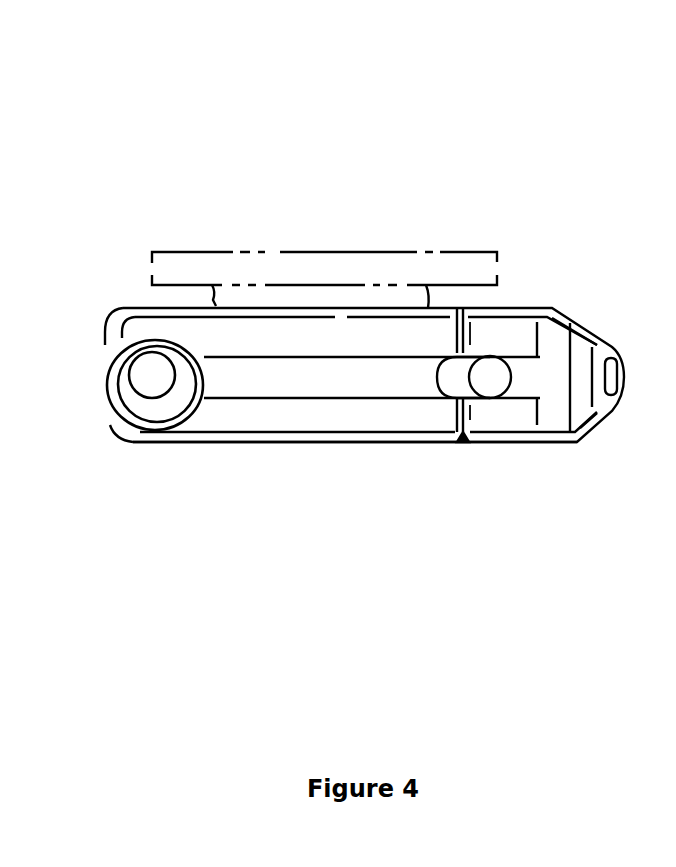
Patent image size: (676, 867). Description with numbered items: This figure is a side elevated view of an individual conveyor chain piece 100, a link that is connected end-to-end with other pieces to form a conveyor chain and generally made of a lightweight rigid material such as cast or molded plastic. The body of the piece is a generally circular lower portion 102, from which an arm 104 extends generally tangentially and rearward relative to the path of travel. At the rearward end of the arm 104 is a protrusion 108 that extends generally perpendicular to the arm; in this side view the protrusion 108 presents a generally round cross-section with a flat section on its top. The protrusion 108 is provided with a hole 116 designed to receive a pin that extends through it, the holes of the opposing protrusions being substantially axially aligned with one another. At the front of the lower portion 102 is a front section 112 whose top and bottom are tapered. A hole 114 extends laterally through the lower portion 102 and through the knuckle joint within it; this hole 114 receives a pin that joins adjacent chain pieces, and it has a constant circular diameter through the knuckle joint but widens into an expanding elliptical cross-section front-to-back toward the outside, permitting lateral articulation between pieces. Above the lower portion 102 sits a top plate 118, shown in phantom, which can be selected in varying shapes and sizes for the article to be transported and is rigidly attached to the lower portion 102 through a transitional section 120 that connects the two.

The conveyor chain piece 100 is at (229, 74).
The lower portion 102 is at (558, 406).
The arm 104 is at (293, 418).
The protrusion 108 is at (122, 390).
The front section 112 is at (596, 329).
The hole 114 is at (489, 378).
The hole 116 is at (155, 378).
The top plate 118 is at (240, 256).
The transitional section 120 is at (215, 301).